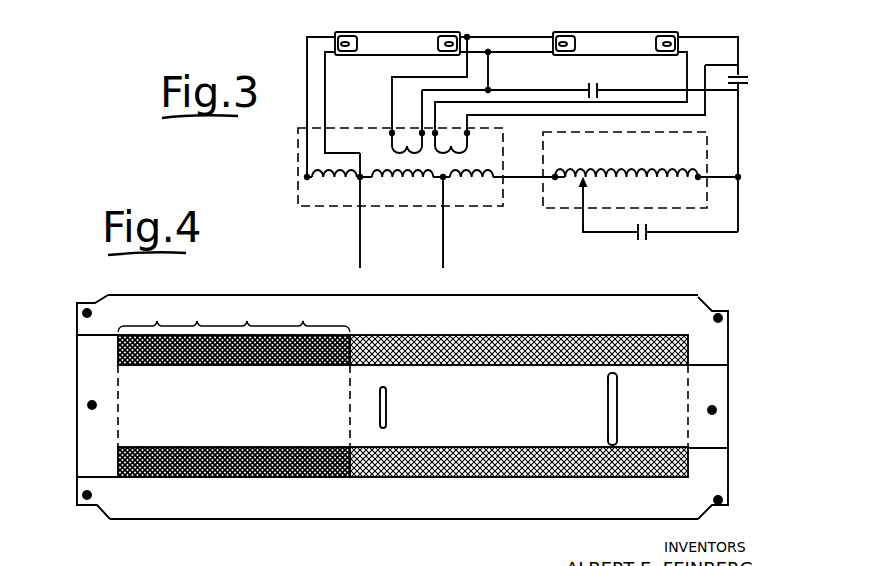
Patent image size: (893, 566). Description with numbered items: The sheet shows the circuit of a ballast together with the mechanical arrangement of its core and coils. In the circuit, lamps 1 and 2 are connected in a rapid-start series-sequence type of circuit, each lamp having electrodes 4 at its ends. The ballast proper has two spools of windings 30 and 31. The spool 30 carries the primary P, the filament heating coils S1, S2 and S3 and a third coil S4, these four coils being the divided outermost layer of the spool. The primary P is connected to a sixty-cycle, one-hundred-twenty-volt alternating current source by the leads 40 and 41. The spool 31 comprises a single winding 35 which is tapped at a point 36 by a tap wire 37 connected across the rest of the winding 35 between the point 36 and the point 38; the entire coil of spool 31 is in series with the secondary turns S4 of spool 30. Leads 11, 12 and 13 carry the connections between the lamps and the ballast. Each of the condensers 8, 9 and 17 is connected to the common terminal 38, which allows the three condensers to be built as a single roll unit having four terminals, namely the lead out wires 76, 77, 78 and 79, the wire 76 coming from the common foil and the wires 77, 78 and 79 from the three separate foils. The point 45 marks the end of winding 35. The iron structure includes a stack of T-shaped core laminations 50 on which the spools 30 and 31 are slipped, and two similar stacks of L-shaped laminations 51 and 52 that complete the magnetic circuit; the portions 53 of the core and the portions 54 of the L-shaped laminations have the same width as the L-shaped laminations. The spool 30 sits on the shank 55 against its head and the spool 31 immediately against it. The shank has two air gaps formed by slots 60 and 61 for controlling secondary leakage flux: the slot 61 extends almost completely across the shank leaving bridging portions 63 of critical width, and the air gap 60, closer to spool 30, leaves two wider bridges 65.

In FIG. 3, the lamp 1 is at (405, 32).
In FIG. 3, the lamp 2 is at (617, 32).
In FIG. 3, the lamp electrodes 4 is at (353, 36).
In FIG. 3, the condenser 8 is at (748, 84).
In FIG. 3, the condenser 9 is at (598, 86).
In FIG. 3, the lead 11 is at (593, 66).
In FIG. 3, the lead 12 is at (472, 66).
In FIG. 3, the lead 13 is at (357, 89).
In FIG. 3, the condenser 17 is at (644, 243).
In FIG. 3, the spool 30 is at (298, 148).
In FIG. 4, the spool 30 is at (140, 477).
In FIG. 3, the spool 31 is at (708, 150).
In FIG. 4, the spool 31 is at (490, 478).
In FIG. 3, the winding 35 is at (624, 172).
In FIG. 3, the tap point 36 is at (584, 189).
In FIG. 3, the tap wire 37 is at (583, 225).
In FIG. 3, the common terminal 38 is at (738, 177).
In FIG. 3, the lead 40 is at (360, 240).
In FIG. 3, the lead 41 is at (443, 244).
In FIG. 3, the winding end 45 is at (568, 174).
In FIG. 4, the T-shaped core laminations 50 is at (95, 385).
In FIG. 4, the L-shaped laminations 51 is at (372, 507).
In FIG. 4, the L-shaped laminations 52 is at (380, 297).
In FIG. 4, the core portions 53 is at (95, 351).
In FIG. 4, the L-shaped lamination portions 54 is at (717, 359).
In FIG. 4, the shank 55 is at (258, 435).
In FIG. 4, the slot 60 is at (388, 408).
In FIG. 4, the slot 61 is at (618, 405).
In FIG. 4, the bridging portions 63 is at (607, 372).
In FIG. 4, the bridges 65 is at (385, 378).
In FIG. 3, the lead out wire 76 is at (738, 218).
In FIG. 3, the lead out wire 77 is at (544, 93).
In FIG. 3, the lead out wire 78 is at (618, 235).
In FIG. 3, the lead out wire 79 is at (738, 67).
In FIG. 3, the filament heating coil S1 is at (327, 181).
In FIG. 4, the filament heating coil S1 is at (137, 317).
In FIG. 3, the filament heating coil S2 is at (400, 142).
In FIG. 4, the filament heating coil S2 is at (177, 314).
In FIG. 3, the filament heating coil S3 is at (443, 144).
In FIG. 4, the filament heating coil S3 is at (222, 314).
In FIG. 3, the third coil S4 is at (468, 182).
In FIG. 4, the third coil S4 is at (298, 317).
In FIG. 3, the primary P is at (405, 182).